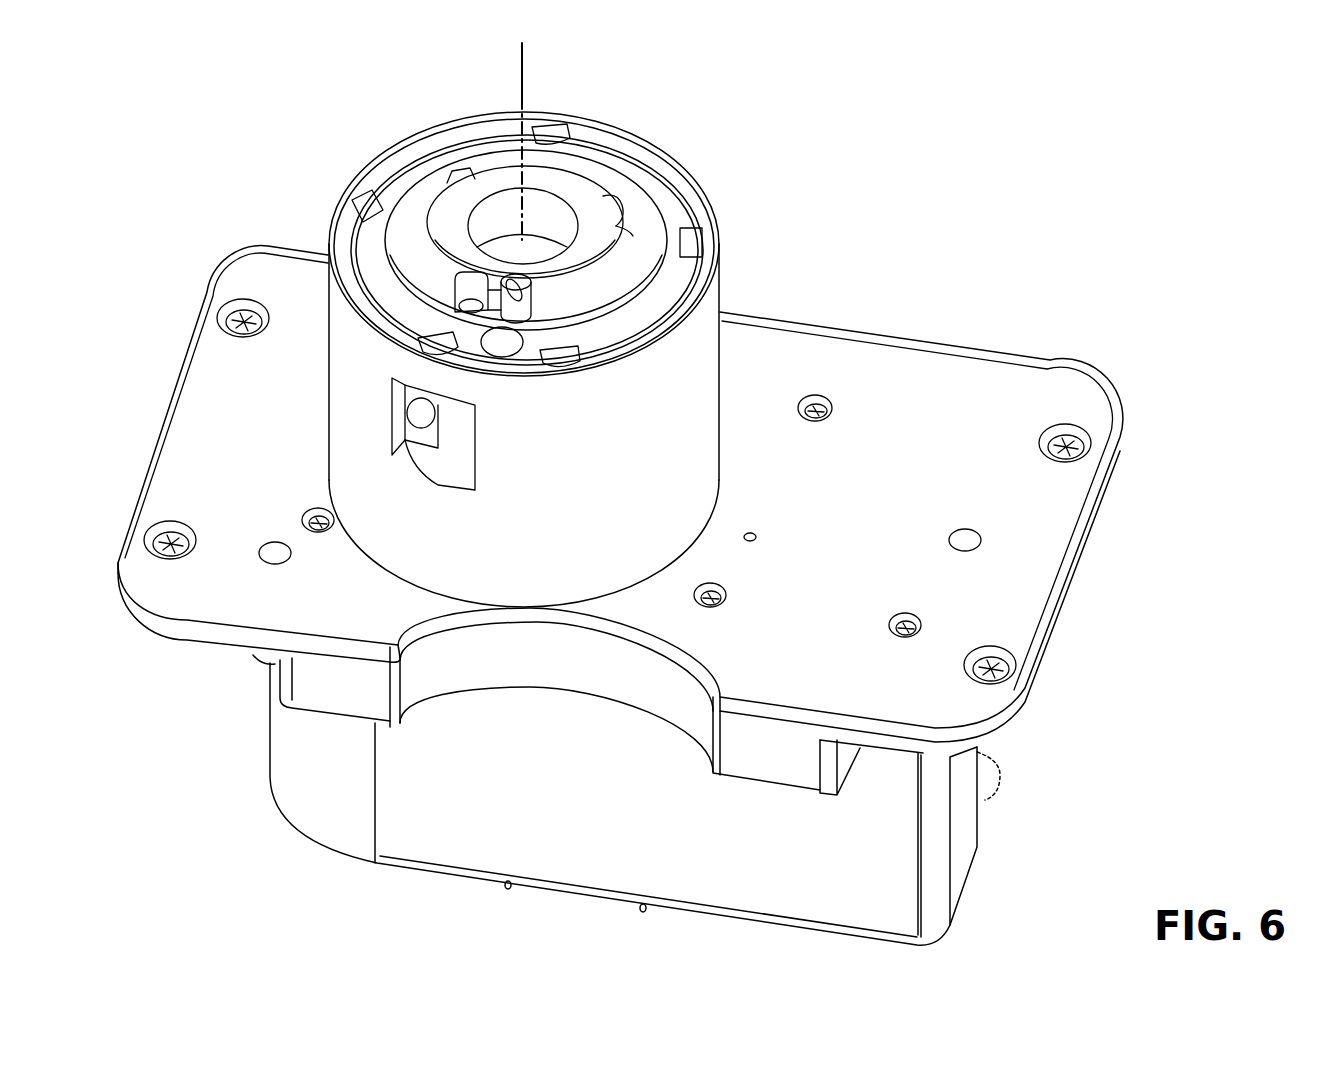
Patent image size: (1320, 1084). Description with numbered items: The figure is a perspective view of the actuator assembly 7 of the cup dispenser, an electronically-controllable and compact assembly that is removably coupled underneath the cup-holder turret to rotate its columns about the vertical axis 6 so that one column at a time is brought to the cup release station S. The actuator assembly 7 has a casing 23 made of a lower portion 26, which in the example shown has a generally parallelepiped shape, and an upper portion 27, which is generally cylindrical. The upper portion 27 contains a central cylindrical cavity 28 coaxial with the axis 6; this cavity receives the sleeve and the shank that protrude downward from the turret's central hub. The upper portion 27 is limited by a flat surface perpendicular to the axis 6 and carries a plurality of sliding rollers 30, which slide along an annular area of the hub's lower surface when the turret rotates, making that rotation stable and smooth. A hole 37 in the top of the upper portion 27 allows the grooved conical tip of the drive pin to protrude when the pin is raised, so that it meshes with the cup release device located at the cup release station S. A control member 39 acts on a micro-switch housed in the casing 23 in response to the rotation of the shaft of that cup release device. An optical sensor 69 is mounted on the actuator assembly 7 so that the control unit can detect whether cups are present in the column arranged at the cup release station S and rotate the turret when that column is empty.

The vertical axis 6 is at (520, 63).
The actuator assembly 7 is at (1000, 284).
The casing 23 is at (218, 260).
The lower portion 26 is at (752, 902).
The upper portion 27 is at (705, 483).
The central cylindrical cavity 28 is at (552, 212).
The sliding rollers 30 is at (552, 128).
The hole 37 is at (505, 358).
The control member 39 is at (520, 320).
The optical sensor 69 is at (424, 452).
The cup release station S is at (535, 710).